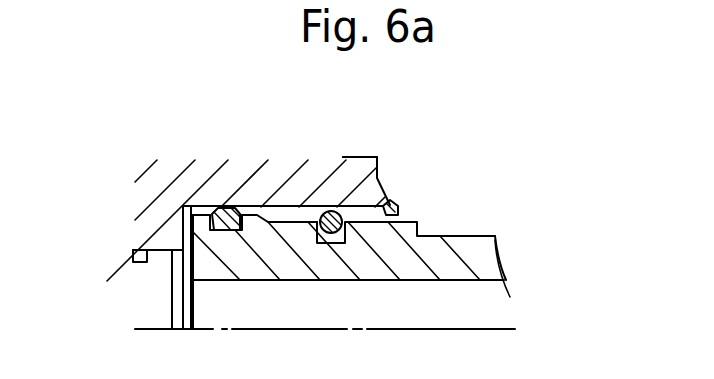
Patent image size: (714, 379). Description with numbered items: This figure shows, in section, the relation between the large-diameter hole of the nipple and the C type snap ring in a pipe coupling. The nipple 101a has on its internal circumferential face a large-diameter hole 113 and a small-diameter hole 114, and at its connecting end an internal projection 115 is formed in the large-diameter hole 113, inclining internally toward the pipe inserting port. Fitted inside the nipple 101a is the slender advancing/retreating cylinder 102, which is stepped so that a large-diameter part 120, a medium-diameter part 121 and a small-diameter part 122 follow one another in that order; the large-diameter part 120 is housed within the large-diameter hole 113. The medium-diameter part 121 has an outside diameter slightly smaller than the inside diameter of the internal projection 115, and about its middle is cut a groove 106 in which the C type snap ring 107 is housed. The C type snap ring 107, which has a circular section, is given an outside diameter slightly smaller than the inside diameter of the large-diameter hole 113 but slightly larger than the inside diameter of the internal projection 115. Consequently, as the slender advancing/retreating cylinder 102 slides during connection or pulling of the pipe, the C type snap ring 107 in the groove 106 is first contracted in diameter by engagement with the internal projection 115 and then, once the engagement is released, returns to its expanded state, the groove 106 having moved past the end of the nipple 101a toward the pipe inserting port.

The nipple 101a is at (133, 173).
The large-diameter part 120 is at (197, 213).
The large-diameter hole 113 is at (263, 207).
The medium-diameter part 121 is at (299, 235).
The C type snap ring 107 is at (344, 157).
The groove 106 is at (343, 221).
The internal projection 115 is at (400, 210).
The slender advancing/retreating cylinder 102 is at (453, 233).
The small-diameter part 122 is at (496, 248).
The small-diameter hole 114 is at (142, 262).